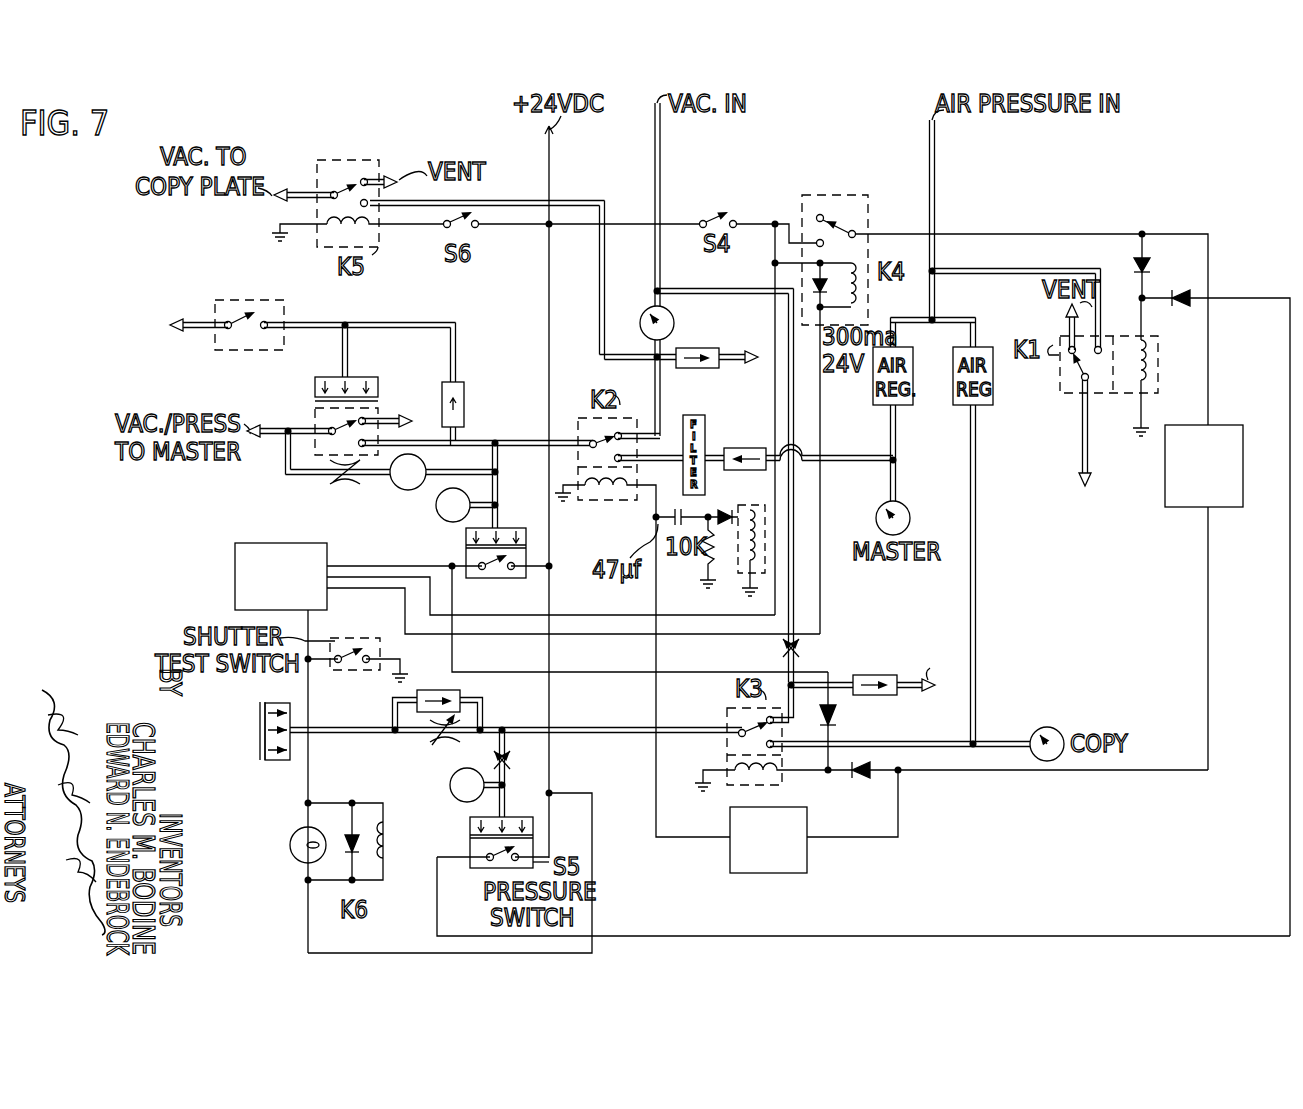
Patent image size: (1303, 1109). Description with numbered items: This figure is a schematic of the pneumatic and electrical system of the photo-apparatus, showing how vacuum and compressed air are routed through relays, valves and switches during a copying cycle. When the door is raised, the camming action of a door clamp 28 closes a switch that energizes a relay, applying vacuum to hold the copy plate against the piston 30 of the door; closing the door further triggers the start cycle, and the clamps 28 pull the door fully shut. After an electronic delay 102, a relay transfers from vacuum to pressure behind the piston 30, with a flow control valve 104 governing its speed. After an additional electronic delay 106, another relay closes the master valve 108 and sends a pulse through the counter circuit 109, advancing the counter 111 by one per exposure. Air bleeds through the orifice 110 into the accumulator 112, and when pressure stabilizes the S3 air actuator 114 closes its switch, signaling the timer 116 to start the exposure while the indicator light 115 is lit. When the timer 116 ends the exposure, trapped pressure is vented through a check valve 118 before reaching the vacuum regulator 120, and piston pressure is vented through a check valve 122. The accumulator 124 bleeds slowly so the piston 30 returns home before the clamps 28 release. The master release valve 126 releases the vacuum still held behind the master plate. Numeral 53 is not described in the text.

The master release valve 126 is at (223, 300).
The master valve 108 is at (315, 387).
The orifice 110 is at (342, 483).
The accumulator 112 is at (438, 506).
The S3 air actuator 114 is at (528, 540).
The timer 116 is at (235, 568).
The pressure switch contact 53 is at (469, 562).
The vacuum regulator 120 is at (674, 327).
The check valve 118 is at (746, 386).
The counter 111 is at (765, 517).
The counter circuit 109 is at (714, 590).
The electronic delay 102 is at (1243, 478).
The door clamp 28 is at (1085, 489).
The check valve 122 is at (878, 696).
The flow control valve 104 is at (429, 742).
The accumulator 124 is at (452, 783).
The indicator light 115 is at (293, 846).
The piston 30 is at (262, 710).
The electronic delay 106 is at (807, 873).